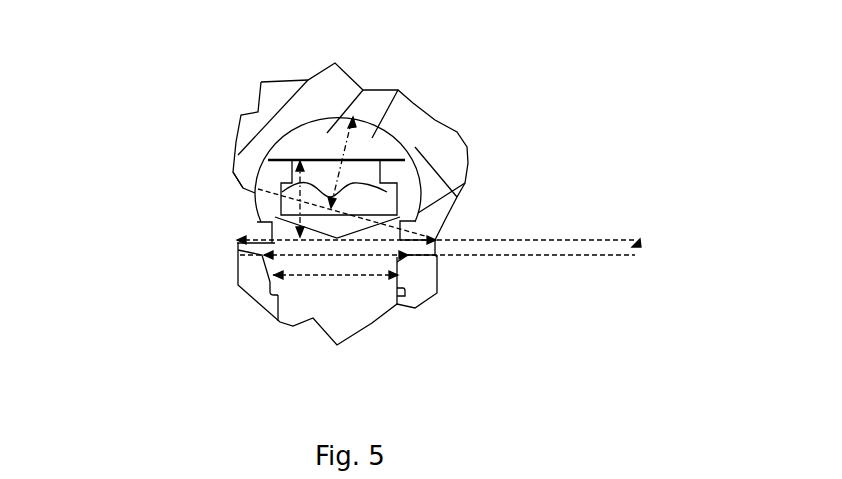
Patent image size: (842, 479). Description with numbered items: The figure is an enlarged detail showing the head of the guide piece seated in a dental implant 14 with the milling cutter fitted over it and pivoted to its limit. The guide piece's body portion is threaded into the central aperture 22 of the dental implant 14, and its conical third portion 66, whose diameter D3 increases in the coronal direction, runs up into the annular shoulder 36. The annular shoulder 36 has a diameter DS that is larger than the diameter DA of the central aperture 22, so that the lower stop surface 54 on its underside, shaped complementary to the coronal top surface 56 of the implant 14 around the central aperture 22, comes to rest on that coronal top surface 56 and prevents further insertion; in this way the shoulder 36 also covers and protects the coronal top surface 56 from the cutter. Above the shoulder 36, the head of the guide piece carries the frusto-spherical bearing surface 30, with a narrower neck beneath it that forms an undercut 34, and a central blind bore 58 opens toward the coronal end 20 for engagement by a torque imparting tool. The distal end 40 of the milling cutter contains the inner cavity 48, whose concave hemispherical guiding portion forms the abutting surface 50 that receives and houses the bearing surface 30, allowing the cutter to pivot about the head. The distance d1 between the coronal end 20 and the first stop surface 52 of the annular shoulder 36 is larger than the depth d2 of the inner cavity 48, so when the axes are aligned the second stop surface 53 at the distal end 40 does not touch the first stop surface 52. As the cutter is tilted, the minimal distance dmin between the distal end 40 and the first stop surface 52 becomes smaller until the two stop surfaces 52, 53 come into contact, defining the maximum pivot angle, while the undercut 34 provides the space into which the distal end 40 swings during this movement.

The dental implant 14 is at (250, 281).
The coronal end 20 is at (358, 160).
The central aperture 22 is at (402, 292).
The bearing surface 30 is at (266, 176).
The undercut 34 is at (257, 221).
The annular shoulder 36 is at (262, 252).
The distal end 40 is at (413, 233).
The inner cavity 48 is at (318, 138).
The abutting surface 50 is at (402, 144).
The first stop surface 52 is at (424, 240).
The second stop surface 53 is at (262, 184).
The lower stop surface 54 is at (262, 254).
The coronal top surface 56 is at (421, 256).
The central blind bore 58 is at (358, 175).
The conical third portion 66 is at (272, 281).
The distance d1 is at (303, 205).
The depth d2 is at (335, 173).
The diameter D3 is at (326, 276).
The diameter DA is at (332, 256).
The diameter DS is at (350, 243).
The minimal distance dmin is at (634, 246).